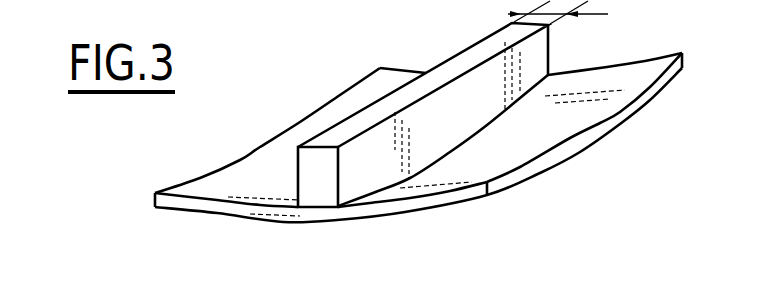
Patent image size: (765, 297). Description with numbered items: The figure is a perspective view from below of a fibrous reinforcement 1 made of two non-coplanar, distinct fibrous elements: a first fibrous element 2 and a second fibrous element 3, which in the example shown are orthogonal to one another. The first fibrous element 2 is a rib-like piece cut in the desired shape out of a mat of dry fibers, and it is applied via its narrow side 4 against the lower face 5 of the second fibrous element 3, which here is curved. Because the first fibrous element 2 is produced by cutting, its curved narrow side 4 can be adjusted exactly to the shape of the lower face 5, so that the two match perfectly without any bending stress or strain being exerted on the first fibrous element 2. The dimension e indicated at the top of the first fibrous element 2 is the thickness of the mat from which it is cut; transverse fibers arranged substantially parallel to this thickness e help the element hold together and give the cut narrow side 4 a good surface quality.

The fibrous reinforcement 1 is at (259, 116).
The first fibrous element 2 is at (437, 110).
The second fibrous element 3 is at (616, 84).
The narrow side 4 is at (373, 193).
The lower face 5 is at (538, 132).
The thickness e is at (558, 12).